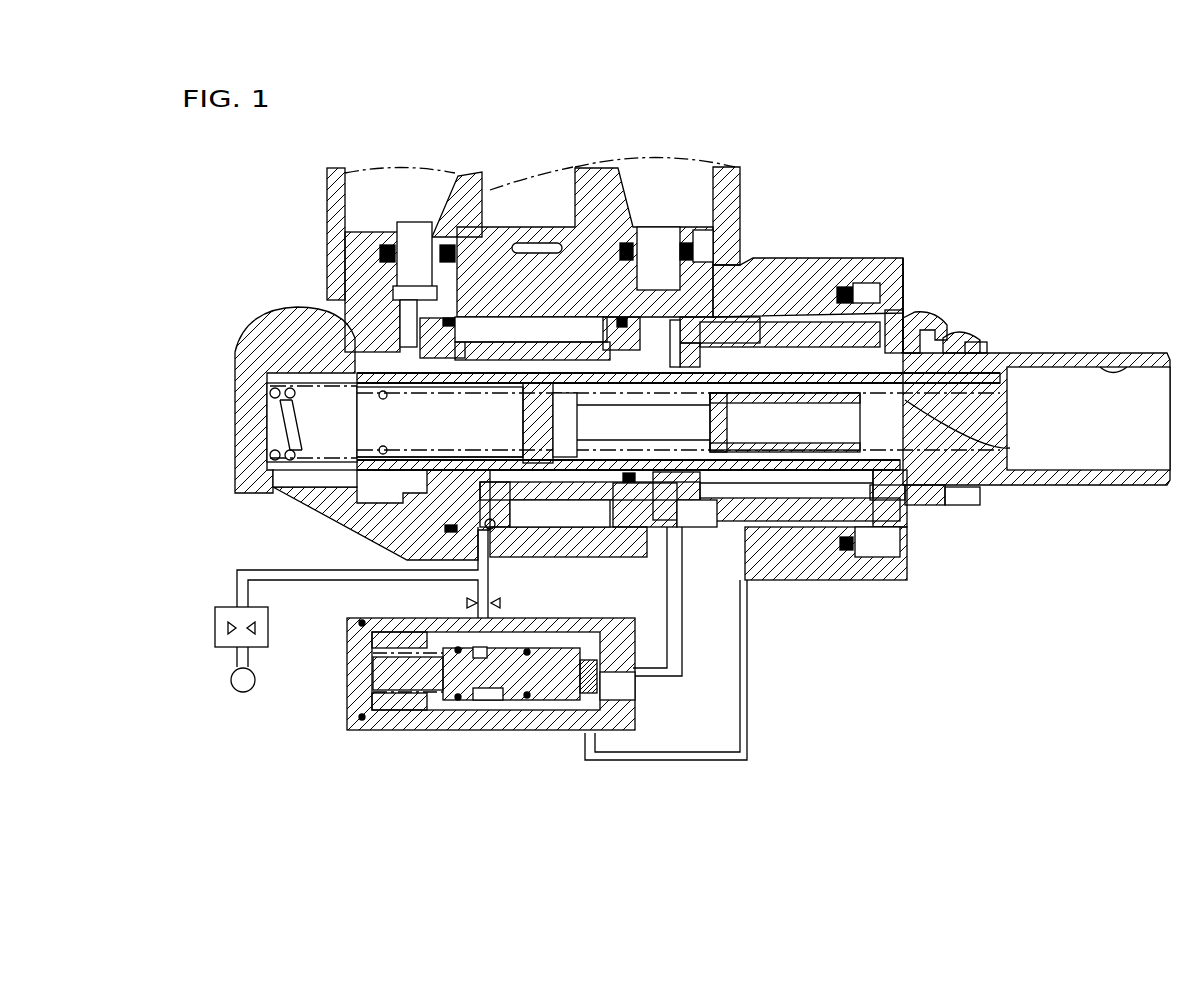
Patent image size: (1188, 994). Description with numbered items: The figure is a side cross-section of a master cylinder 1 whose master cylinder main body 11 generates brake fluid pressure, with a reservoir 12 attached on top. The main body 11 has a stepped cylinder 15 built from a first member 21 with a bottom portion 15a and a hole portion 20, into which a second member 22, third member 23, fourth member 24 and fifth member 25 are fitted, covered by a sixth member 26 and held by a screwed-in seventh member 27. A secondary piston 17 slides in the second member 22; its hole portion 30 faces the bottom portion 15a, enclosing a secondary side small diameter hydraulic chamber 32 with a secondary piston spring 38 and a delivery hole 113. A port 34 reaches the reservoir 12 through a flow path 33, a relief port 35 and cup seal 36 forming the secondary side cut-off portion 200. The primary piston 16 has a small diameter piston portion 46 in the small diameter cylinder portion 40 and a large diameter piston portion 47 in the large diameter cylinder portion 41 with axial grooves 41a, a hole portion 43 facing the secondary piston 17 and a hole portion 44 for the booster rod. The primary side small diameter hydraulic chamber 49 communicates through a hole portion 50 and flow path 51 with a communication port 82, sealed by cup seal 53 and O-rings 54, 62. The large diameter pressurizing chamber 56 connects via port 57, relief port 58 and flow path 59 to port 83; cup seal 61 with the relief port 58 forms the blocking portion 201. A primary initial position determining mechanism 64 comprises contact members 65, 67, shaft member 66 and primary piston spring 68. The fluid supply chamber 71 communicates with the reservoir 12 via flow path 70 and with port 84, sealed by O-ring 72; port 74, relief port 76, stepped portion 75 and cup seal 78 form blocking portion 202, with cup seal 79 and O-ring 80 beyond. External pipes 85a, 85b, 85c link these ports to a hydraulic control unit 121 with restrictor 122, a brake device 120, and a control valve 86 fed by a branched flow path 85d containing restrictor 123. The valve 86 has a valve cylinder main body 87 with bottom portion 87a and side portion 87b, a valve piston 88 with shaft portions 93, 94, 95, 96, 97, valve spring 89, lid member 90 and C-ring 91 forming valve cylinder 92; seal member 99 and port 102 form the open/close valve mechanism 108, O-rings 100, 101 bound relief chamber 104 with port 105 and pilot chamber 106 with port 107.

The master cylinder 1 is at (272, 290).
The master cylinder main body 11 is at (220, 338).
The reservoir 12 is at (318, 191).
The secondary side delivery hole 113 is at (260, 344).
The stepped cylinder 15 is at (906, 330).
The bottom portion 15a is at (233, 482).
The primary piston 16 is at (1087, 348).
The secondary piston 17 is at (486, 205).
The hole portion 20 is at (537, 225).
The first member 21 is at (840, 285).
The second member 22 is at (407, 497).
The third member 23 is at (548, 547).
The fourth member 24 is at (778, 545).
The fifth member 25 is at (955, 333).
The sixth member 26 is at (937, 318).
The seventh member 27 is at (880, 285).
The hole portion 30 is at (452, 385).
The secondary side small diameter hydraulic chamber 32 is at (313, 478).
The flow path 33 is at (357, 337).
The port 34 is at (412, 390).
The relief port 35 is at (384, 398).
The cup seal 36 is at (365, 343).
The secondary piston spring 38 is at (265, 450).
The small diameter cylinder portion 40 is at (725, 560).
The large diameter cylinder portion 41 is at (836, 582).
The axial-direction grooves 41a is at (878, 578).
The hole portion 43 is at (765, 402).
The hole portion 44 is at (1128, 355).
The small diameter piston portion 46 is at (813, 370).
The large diameter piston portion 47 is at (940, 508).
The primary side small diameter hydraulic chamber 49 is at (566, 205).
The hole portion 50 is at (535, 452).
The small diameter hydraulic chamber communication flow path 51 is at (523, 547).
The cup seal 53 is at (515, 440).
The O-ring 54 is at (430, 527).
The large diameter pressurizing chamber 56 is at (810, 560).
The port 57 is at (660, 310).
The relief port 58 is at (715, 452).
The pressurizing chamber communication flow path 59 is at (705, 305).
The cup seal 61 is at (670, 530).
The O-ring 62 is at (607, 535).
The primary initial position determining mechanism 64 is at (783, 350).
The contact member 65 is at (498, 225).
The shaft member 66 is at (620, 428).
The contact member 67 is at (808, 402).
The primary piston spring 68 is at (612, 330).
The flow path 70 is at (757, 330).
The fluid supply chamber 71 is at (738, 585).
The O-ring 72 is at (710, 525).
The port 74 is at (897, 318).
The stepped portion 75 is at (1008, 449).
The relief port 76 is at (985, 350).
The cup seal 78 is at (895, 535).
The cup seal 79 is at (963, 508).
The O-ring 80 is at (866, 582).
The small diameter hydraulic chamber communication port 82 is at (497, 522).
The pressurizing chamber communication port 83 is at (663, 580).
The fluid supply chamber communication port 84 is at (748, 565).
The external communication flow path 85a is at (290, 570).
The coupling flow path 85b is at (684, 668).
The coupling flow path 85c is at (748, 712).
The branched flow path 85d is at (478, 590).
The control valve 86 is at (338, 731).
The valve cylinder main body 87 is at (417, 735).
The bottom portion 87a is at (640, 722).
The side portion 87b is at (403, 732).
The valve piston 88 is at (515, 738).
The valve spring 89 is at (362, 720).
The lid member 90 is at (373, 658).
The C-ring 91 is at (359, 622).
The valve cylinder 92 is at (463, 735).
The first shaft portion 93 is at (575, 703).
The second shaft portion 94 is at (591, 630).
The third shaft portion 95 is at (463, 648).
The fourth shaft portion 96 is at (442, 648).
The fifth shaft portion 97 is at (387, 677).
The seal member 99 is at (620, 643).
The O-ring 100 is at (535, 733).
The O-ring 101 is at (433, 735).
The port 102 is at (640, 684).
The fluid chamber 104 is at (585, 685).
The port 105 is at (600, 745).
The fluid chamber 106 is at (510, 735).
The port 107 is at (560, 632).
The open/close valve mechanism 108 is at (604, 643).
The brake device 120 is at (231, 686).
The hydraulic control unit 121 is at (226, 607).
The restrictor 122 is at (218, 632).
The restrictor 123 is at (502, 603).
The secondary side cut-off portion 200 is at (335, 316).
The small diameter hydraulic chamber side blocking portion 201 is at (640, 340).
The large diameter pressurizing chamber side blocking portion 202 is at (912, 255).